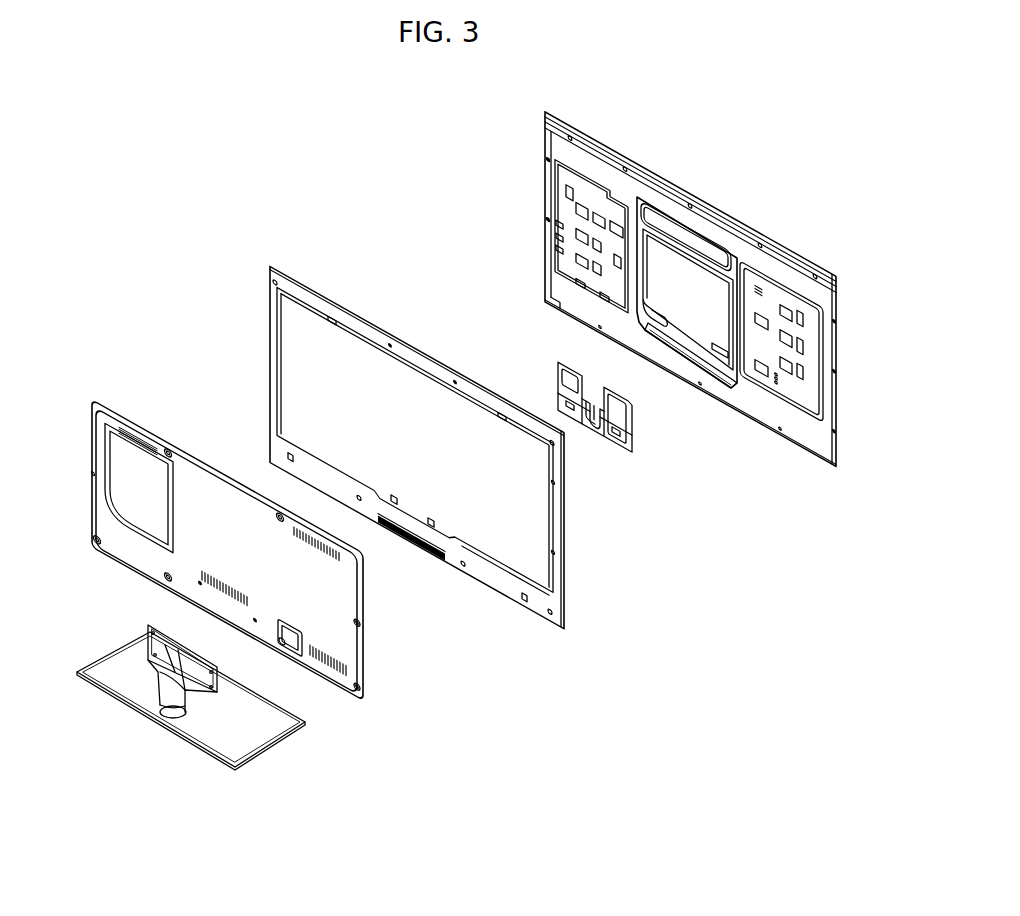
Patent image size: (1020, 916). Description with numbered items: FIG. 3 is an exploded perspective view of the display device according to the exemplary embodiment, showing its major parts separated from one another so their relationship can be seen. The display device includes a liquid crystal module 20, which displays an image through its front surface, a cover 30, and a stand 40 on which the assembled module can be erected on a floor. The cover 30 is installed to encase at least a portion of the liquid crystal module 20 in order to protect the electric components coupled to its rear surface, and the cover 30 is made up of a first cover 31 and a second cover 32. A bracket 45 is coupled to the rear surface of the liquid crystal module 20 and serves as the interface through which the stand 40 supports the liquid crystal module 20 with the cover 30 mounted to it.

The liquid crystal module 20 is at (674, 168).
The cover 30 is at (328, 515).
The first cover 31 is at (544, 638).
The second cover 32 is at (279, 559).
The stand 40 is at (176, 752).
The bracket 45 is at (649, 457).